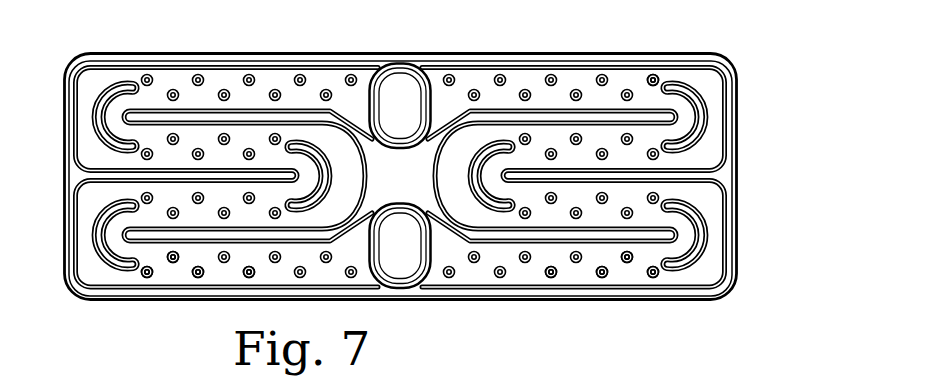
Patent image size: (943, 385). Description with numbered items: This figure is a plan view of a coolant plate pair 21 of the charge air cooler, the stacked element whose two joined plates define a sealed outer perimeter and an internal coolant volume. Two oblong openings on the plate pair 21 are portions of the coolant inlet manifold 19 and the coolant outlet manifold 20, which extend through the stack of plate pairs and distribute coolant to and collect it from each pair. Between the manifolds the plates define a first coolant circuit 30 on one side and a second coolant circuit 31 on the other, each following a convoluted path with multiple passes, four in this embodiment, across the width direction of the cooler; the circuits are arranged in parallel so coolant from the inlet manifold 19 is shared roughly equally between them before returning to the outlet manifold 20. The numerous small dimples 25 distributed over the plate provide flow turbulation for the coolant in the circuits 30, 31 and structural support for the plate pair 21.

The coolant inlet manifold 19 is at (403, 247).
The coolant outlet manifold 20 is at (399, 95).
The coolant plate pair 21 is at (737, 293).
The dimples 25 is at (652, 76).
The first coolant circuit 30 is at (173, 278).
The second coolant circuit 31 is at (525, 278).